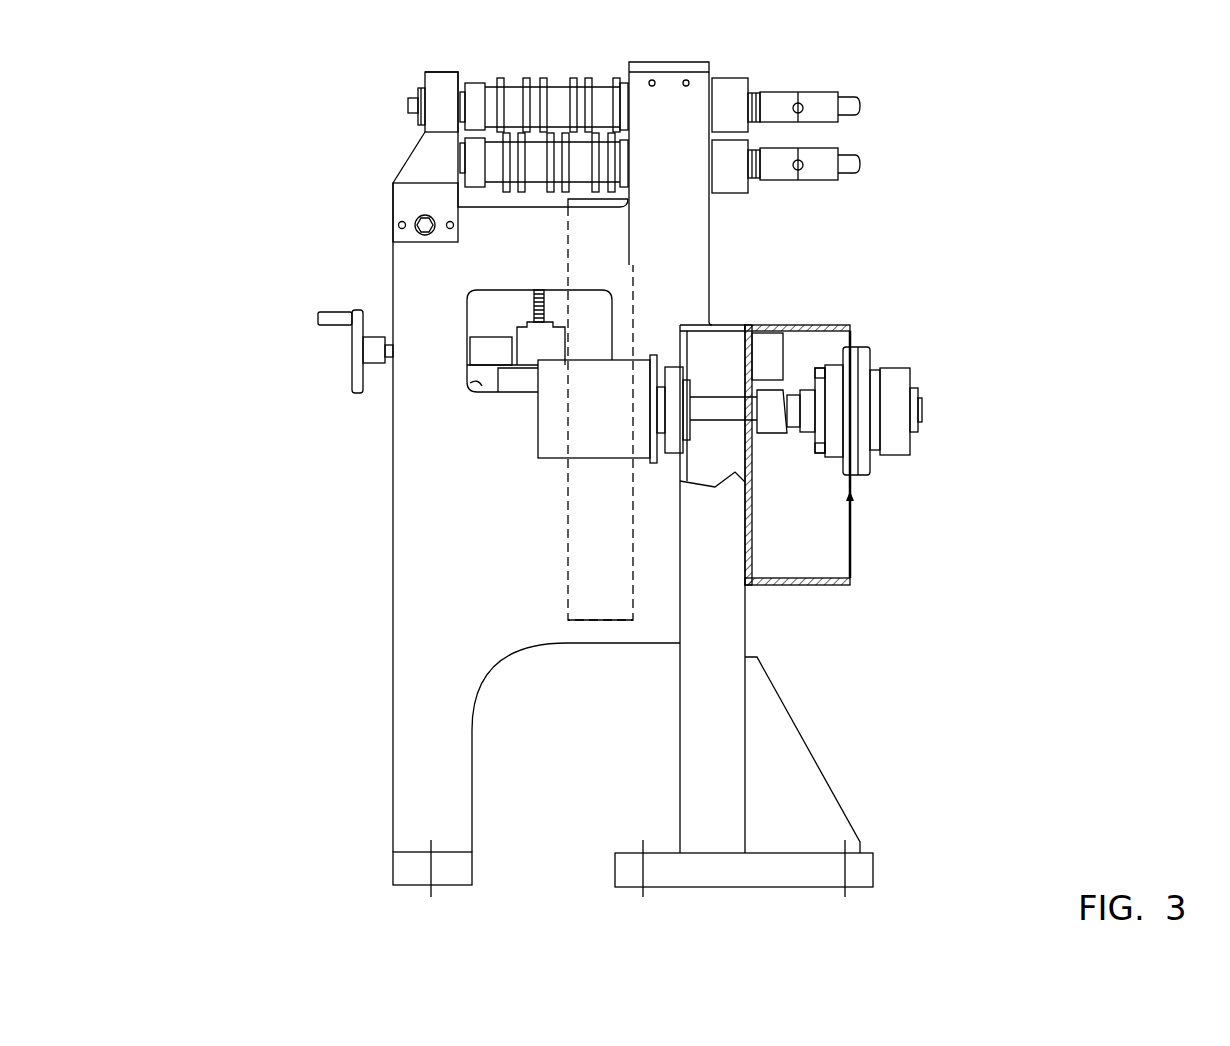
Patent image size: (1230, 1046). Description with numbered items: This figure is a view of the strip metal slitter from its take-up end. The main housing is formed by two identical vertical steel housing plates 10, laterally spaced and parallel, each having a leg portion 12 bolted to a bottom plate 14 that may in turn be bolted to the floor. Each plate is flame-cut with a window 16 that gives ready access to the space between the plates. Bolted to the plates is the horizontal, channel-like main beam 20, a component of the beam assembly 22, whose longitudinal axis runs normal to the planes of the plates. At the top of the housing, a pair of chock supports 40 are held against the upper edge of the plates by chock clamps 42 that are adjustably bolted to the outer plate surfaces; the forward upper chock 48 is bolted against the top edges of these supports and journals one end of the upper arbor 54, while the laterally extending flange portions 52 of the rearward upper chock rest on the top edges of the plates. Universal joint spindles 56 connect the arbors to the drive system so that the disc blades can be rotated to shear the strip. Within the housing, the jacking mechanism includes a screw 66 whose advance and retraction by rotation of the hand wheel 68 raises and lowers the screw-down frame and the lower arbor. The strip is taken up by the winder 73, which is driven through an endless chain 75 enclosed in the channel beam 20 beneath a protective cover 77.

The housing plates 10 is at (716, 253).
The leg portion 12 is at (457, 777).
The bottom plate 14 is at (452, 868).
The window 16 is at (498, 300).
The main beam 20 is at (805, 325).
The beam assembly 22 is at (753, 642).
The chock supports 40 is at (417, 155).
The chock clamps 42 is at (407, 195).
The forward upper chock 48 is at (440, 78).
The flange portions 52 is at (674, 62).
The upper arbor 54 is at (407, 103).
The universal joint spindles 56 is at (820, 156).
The screw 66 is at (546, 300).
The hand wheel 68 is at (355, 365).
The winder 73 is at (902, 443).
The endless chain 75 is at (822, 367).
The protective cover 77 is at (853, 540).